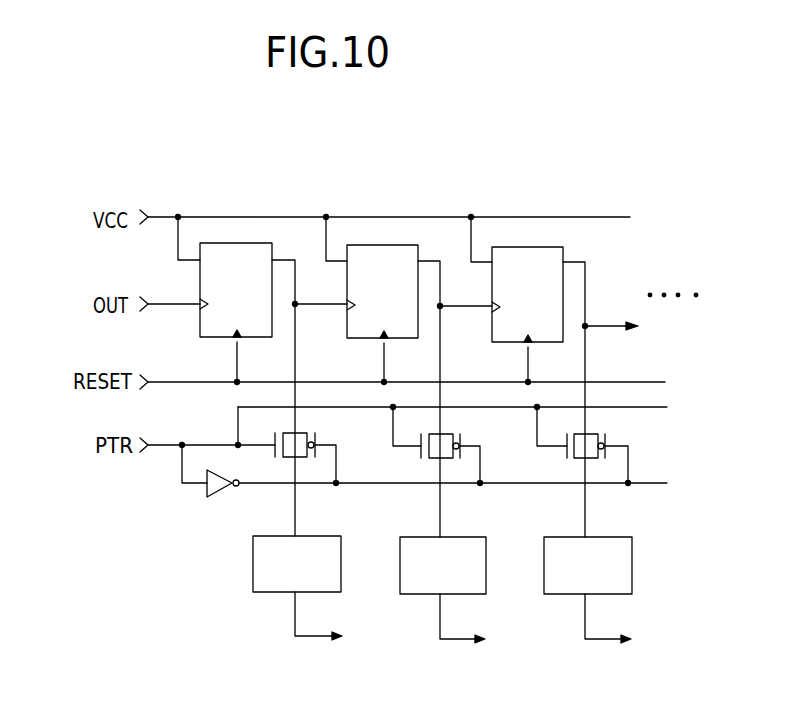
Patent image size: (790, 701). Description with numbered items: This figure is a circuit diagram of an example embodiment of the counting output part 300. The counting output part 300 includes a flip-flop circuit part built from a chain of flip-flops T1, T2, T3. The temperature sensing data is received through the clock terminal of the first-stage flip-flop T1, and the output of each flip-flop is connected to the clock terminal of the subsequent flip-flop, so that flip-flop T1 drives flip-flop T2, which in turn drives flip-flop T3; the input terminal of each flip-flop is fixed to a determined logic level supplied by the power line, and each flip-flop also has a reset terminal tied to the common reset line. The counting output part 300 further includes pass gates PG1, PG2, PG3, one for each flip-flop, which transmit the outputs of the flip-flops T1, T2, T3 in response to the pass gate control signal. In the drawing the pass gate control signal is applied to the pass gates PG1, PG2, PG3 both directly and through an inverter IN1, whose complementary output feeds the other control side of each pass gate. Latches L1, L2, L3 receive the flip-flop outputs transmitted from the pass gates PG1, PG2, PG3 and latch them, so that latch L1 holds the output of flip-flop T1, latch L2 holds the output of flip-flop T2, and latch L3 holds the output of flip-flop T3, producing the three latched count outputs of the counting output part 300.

The counting output part 300 is at (236, 152).
The first-stage flip-flop T1 is at (234, 243).
The flip-flop T2 is at (383, 245).
The flip-flop T3 is at (528, 247).
The inverter IN1 is at (221, 496).
The pass gate PG1 is at (300, 433).
The pass gate PG2 is at (445, 434).
The pass gate PG3 is at (606, 434).
The latch L1 is at (314, 536).
The latch L2 is at (460, 537).
The latch L3 is at (606, 537).